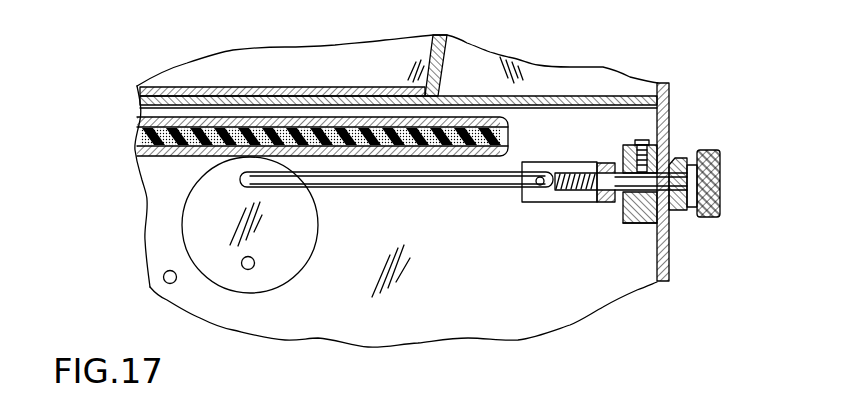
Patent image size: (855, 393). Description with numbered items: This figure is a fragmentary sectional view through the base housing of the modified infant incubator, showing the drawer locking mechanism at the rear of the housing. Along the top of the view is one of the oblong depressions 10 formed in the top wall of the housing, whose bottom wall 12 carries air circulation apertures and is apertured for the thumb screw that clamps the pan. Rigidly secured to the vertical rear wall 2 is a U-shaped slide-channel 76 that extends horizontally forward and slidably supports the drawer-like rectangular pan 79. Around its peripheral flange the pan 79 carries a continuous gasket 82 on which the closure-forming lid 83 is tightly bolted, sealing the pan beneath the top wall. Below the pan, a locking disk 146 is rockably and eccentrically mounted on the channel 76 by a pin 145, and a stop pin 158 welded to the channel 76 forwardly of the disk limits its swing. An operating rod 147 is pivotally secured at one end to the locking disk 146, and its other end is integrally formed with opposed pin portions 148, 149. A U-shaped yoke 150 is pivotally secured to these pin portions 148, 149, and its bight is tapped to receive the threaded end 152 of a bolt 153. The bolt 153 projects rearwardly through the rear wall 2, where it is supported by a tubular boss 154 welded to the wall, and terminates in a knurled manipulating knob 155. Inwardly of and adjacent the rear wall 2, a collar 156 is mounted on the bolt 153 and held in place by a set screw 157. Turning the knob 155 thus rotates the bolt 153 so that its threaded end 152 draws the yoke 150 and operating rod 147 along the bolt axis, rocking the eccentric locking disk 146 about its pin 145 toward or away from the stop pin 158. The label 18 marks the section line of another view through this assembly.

The depression 10 is at (350, 66).
The bottom wall 12 is at (207, 84).
The slide-channel 76 is at (571, 91).
The lid 83 is at (138, 119).
The gasket 82 is at (138, 131).
The pan 79 is at (157, 156).
The locking disk 146 is at (298, 276).
The pin 145 is at (252, 270).
The stop pin 158 is at (165, 282).
The operating rod 147 is at (472, 188).
The pin portion 149 is at (540, 188).
The threaded end 152 is at (572, 173).
The yoke 150 is at (578, 203).
The section line 18 is at (518, 170).
The set screw 157 is at (643, 142).
The bolt 153 is at (621, 212).
The collar 156 is at (640, 223).
The rear wall 2 is at (667, 270).
The tubular boss 154 is at (677, 158).
The knurled manipulating knob 155 is at (719, 170).
The pin portion 148 is at (287, 388).